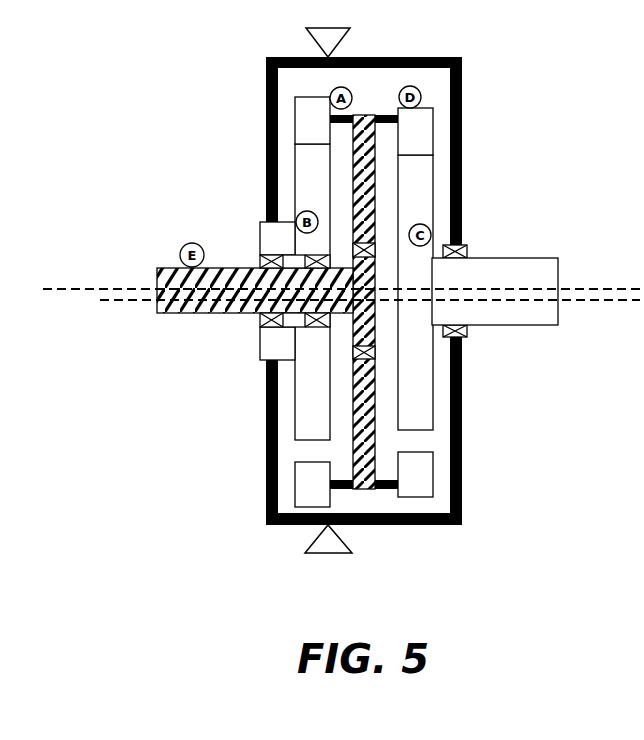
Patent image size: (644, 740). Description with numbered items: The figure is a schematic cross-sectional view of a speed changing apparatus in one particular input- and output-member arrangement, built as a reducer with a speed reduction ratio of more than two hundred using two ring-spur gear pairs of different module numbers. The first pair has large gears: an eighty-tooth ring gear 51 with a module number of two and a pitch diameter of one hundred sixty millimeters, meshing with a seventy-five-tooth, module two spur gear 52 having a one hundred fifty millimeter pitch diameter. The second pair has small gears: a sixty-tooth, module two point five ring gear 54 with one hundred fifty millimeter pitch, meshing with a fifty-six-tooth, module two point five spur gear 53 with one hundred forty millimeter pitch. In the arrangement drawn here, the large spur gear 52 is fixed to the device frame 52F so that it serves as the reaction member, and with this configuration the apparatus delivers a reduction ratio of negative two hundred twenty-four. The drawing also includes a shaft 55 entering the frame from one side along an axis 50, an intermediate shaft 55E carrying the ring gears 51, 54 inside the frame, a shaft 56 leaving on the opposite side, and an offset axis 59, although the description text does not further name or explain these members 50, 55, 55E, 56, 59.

The input axis center line 50 is at (112, 289).
The ring gear 51 is at (294, 108).
The spur gear 52 is at (294, 165).
The device frame 52F is at (273, 57).
The spur gear 53 is at (433, 177).
The ring gear 54 is at (433, 118).
The input shaft 55 is at (192, 313).
The eccentric intermediate shaft 55E is at (377, 115).
The output shaft 56 is at (525, 327).
The offset axis line 59 is at (123, 301).